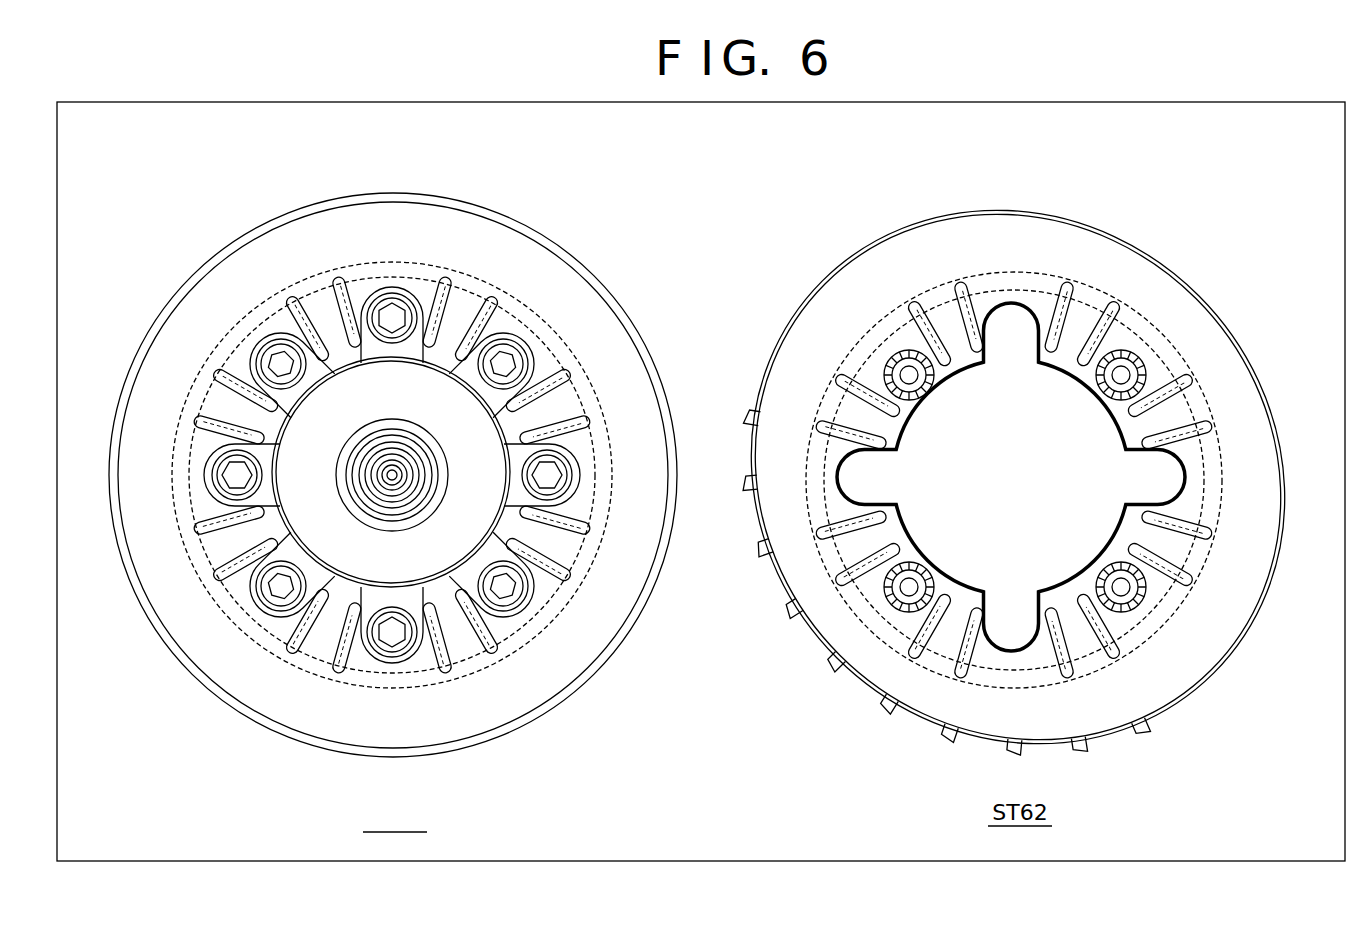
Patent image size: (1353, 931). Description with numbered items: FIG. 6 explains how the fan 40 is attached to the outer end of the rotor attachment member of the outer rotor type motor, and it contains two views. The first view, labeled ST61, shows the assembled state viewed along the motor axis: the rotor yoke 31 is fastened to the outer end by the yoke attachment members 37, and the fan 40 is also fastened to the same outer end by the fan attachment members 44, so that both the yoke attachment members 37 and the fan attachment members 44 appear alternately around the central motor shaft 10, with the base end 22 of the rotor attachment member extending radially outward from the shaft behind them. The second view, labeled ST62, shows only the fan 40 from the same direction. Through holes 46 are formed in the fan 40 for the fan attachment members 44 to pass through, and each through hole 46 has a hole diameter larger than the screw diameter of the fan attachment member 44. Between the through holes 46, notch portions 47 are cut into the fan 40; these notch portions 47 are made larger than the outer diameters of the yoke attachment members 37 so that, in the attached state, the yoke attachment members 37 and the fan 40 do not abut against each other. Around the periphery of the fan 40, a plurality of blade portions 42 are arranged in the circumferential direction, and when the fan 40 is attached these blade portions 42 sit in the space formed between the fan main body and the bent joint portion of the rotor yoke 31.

The motor shaft 10 is at (400, 476).
The base end 22 is at (300, 440).
The rotor yoke 31 is at (230, 226).
The yoke attachment members 37 is at (397, 318).
The fan 40 is at (388, 212).
The blade portions 42 is at (872, 703).
The fan attachment members 44 is at (282, 356).
The through holes 46 is at (905, 372).
The notch portions 47 is at (1012, 305).